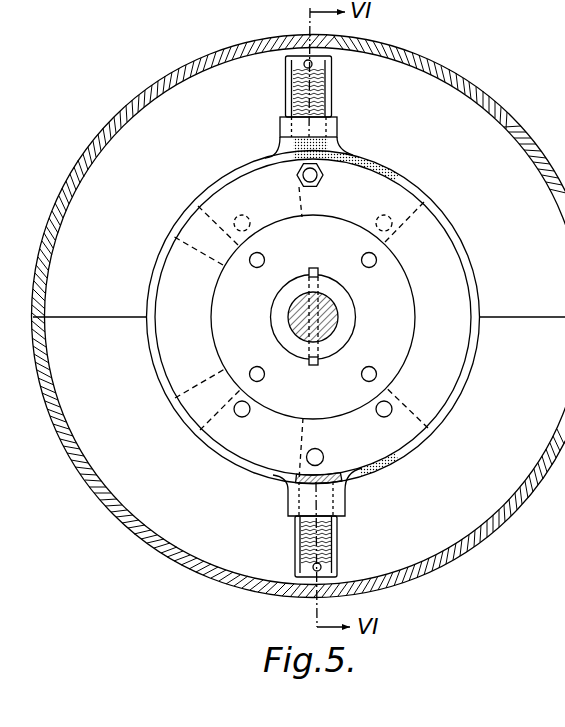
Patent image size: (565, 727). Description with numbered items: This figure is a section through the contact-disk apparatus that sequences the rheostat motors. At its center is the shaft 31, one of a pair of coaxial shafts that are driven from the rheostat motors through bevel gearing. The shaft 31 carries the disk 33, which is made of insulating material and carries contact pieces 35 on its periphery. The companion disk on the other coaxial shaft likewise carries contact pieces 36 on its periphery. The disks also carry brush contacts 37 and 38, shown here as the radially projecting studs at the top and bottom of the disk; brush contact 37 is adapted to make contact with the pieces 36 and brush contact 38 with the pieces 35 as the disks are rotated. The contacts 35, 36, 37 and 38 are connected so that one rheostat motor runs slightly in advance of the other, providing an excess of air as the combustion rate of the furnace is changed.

The shaft 31 is at (336, 312).
The disk 33 is at (447, 388).
The contact piece 35 is at (156, 368).
The contact piece 36 is at (200, 427).
The brush contact 37 is at (337, 532).
The brush contact 38 is at (332, 91).